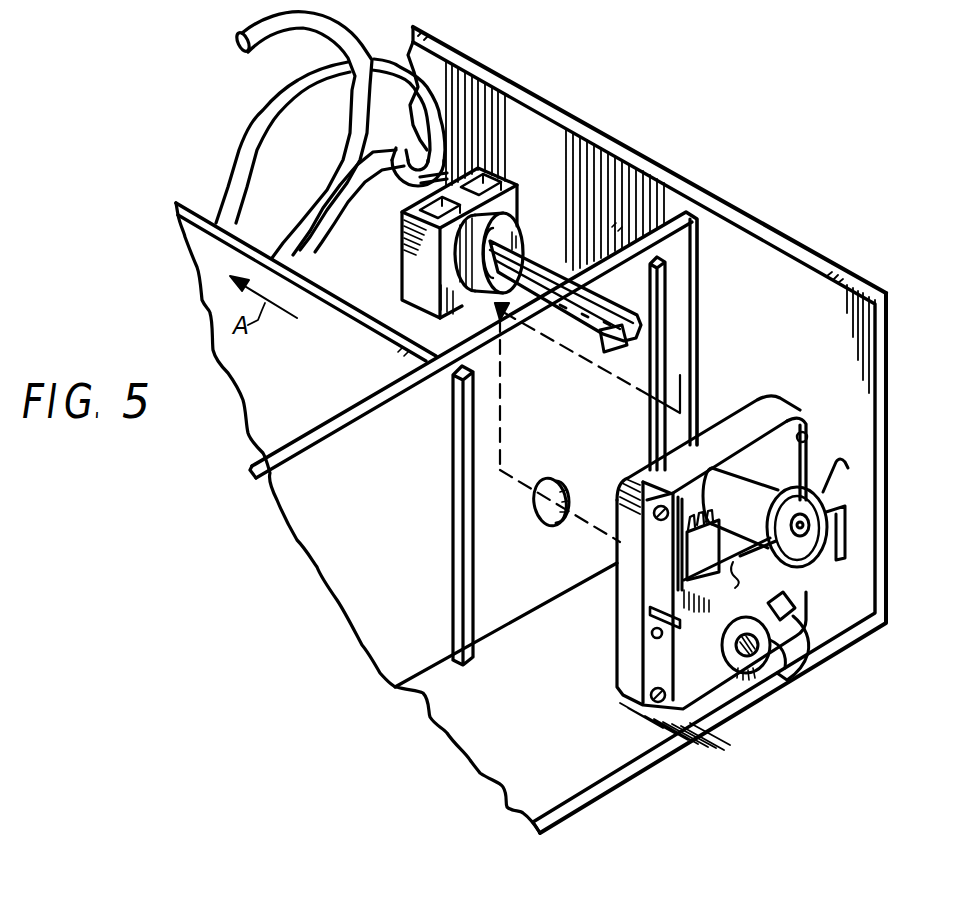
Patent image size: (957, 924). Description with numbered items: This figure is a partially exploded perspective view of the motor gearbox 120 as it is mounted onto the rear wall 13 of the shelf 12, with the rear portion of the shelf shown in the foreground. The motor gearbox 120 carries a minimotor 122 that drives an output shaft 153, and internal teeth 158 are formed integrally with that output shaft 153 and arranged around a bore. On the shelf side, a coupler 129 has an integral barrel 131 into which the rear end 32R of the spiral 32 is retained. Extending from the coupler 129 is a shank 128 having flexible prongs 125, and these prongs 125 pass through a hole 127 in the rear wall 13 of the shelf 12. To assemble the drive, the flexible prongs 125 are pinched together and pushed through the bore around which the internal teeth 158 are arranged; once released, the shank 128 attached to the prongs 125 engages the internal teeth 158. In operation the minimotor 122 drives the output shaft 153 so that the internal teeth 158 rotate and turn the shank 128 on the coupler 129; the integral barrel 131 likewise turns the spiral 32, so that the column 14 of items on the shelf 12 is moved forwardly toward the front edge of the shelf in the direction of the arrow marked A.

The shelf 12 is at (764, 210).
The rear wall 13 is at (683, 212).
The column 14 is at (233, 118).
The spiral 32 is at (232, 178).
The rear end 32R is at (380, 172).
The integral barrel 131 is at (387, 232).
The coupler 129 is at (500, 180).
The shank 128 is at (547, 295).
The flexible prongs 125 is at (614, 350).
The hole 127 is at (558, 490).
The minimotor 122 is at (738, 480).
The motor gearbox 120 is at (708, 689).
The internal teeth 158 is at (763, 672).
The output shaft 153 is at (794, 658).